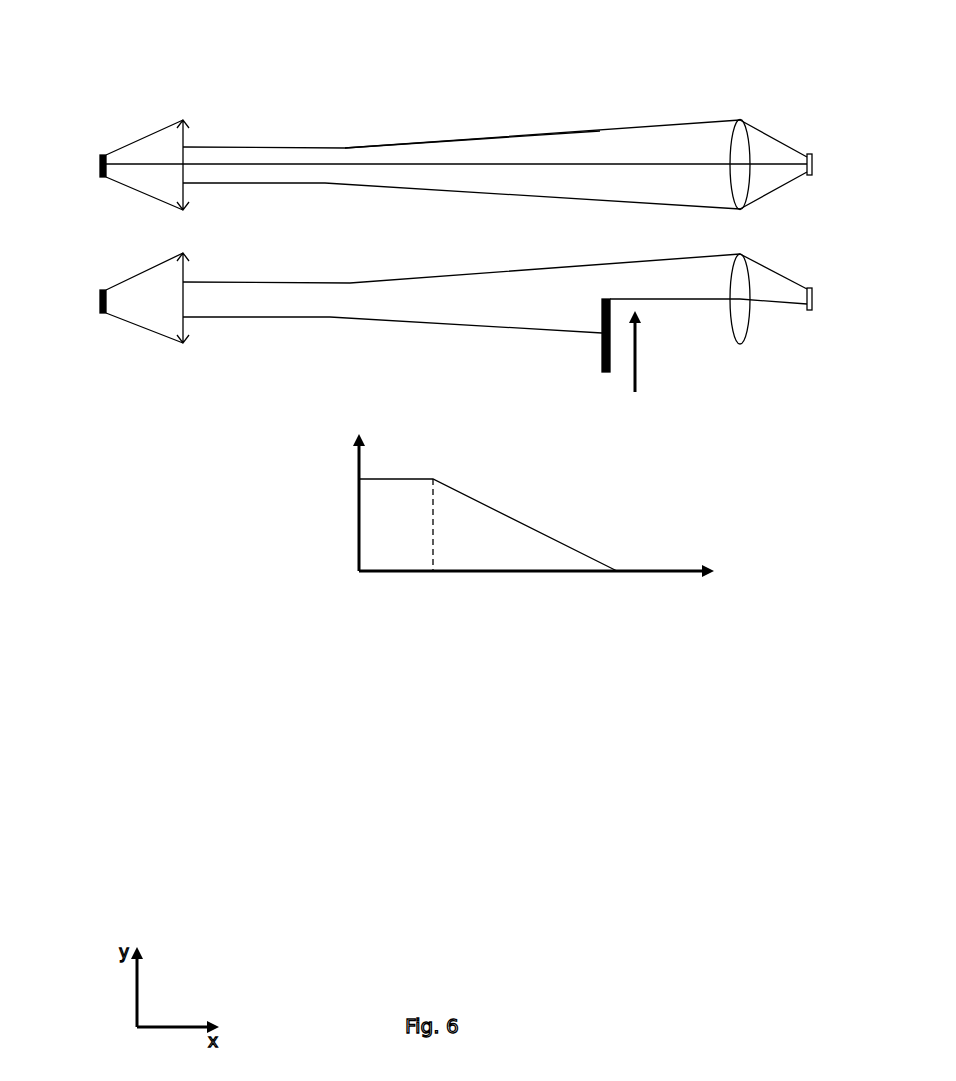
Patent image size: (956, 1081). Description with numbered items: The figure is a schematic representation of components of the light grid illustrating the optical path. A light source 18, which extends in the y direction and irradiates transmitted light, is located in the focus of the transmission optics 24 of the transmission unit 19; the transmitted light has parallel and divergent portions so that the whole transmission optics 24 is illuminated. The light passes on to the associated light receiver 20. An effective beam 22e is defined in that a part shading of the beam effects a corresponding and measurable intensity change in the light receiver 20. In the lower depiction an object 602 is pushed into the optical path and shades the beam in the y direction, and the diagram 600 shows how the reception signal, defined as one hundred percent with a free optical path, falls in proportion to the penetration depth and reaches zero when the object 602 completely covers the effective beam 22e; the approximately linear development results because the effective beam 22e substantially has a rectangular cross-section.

The light source 18 is at (100, 164).
The transmission unit 19 is at (126, 97).
The light receiver 20 is at (813, 160).
The transmission optics 24 is at (192, 138).
The effective beam 22e is at (508, 150).
The object 602 is at (600, 363).
The diagram 600 is at (548, 516).